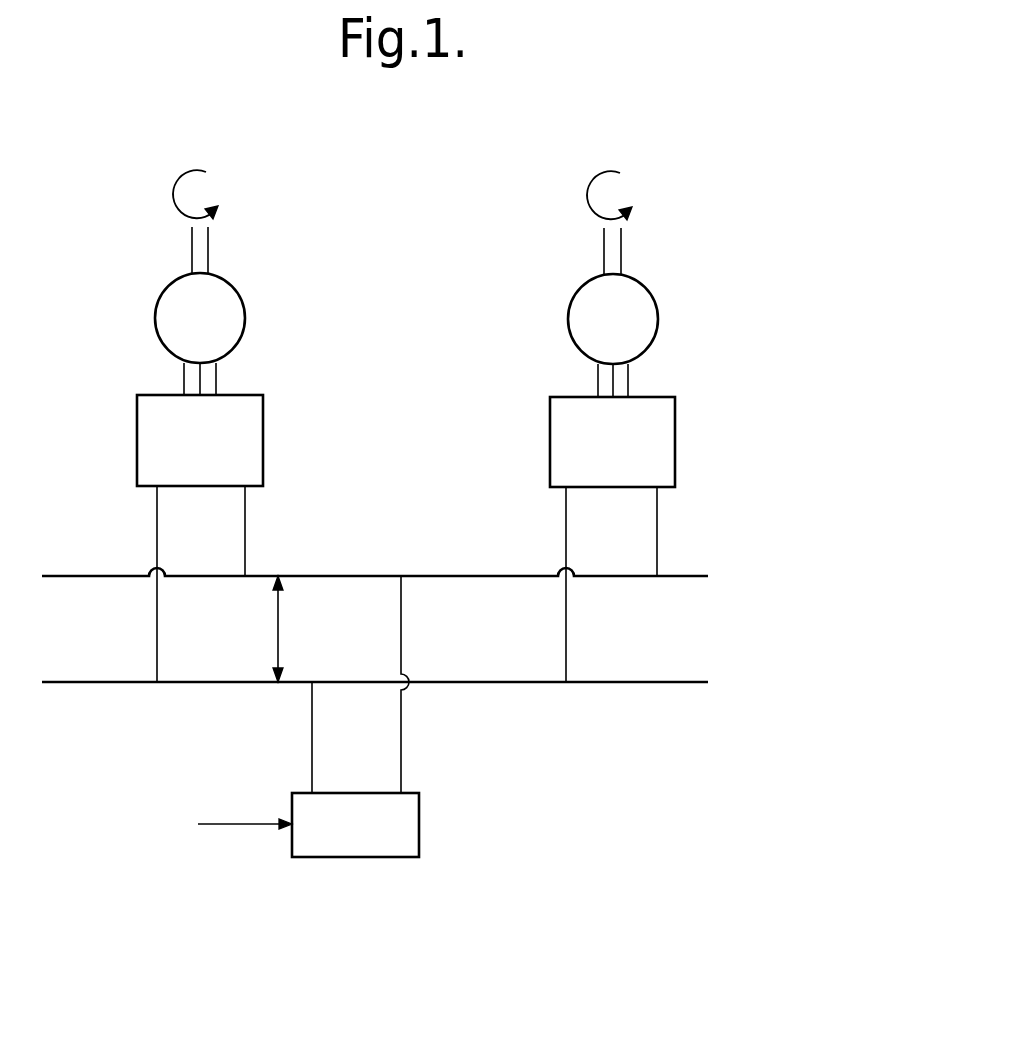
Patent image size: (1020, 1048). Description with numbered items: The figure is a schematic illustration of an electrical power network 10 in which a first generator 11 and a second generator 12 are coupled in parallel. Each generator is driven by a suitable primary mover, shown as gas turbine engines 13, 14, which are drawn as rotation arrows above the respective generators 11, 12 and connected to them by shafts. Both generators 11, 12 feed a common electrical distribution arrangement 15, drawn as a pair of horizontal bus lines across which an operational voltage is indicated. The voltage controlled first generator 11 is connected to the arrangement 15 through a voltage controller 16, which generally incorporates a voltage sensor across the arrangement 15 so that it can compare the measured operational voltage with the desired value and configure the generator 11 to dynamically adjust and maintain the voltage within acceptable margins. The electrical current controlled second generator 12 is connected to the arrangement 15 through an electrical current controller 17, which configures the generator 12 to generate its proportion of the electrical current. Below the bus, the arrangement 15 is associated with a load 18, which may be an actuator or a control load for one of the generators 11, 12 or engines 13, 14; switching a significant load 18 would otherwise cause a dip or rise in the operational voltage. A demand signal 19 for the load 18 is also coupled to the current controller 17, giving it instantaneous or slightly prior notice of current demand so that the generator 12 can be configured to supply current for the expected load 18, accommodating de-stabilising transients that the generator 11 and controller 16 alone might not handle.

The electrical power network 10 is at (788, 328).
The first generator 11 is at (232, 305).
The second generator 12 is at (630, 296).
The gas turbine engine 13 is at (213, 192).
The gas turbine engine 14 is at (626, 186).
The distribution arrangement 15 is at (708, 578).
The voltage controller 16 is at (250, 428).
The electrical current controller 17 is at (660, 440).
The load 18 is at (402, 821).
The demand signal 19 is at (230, 827).